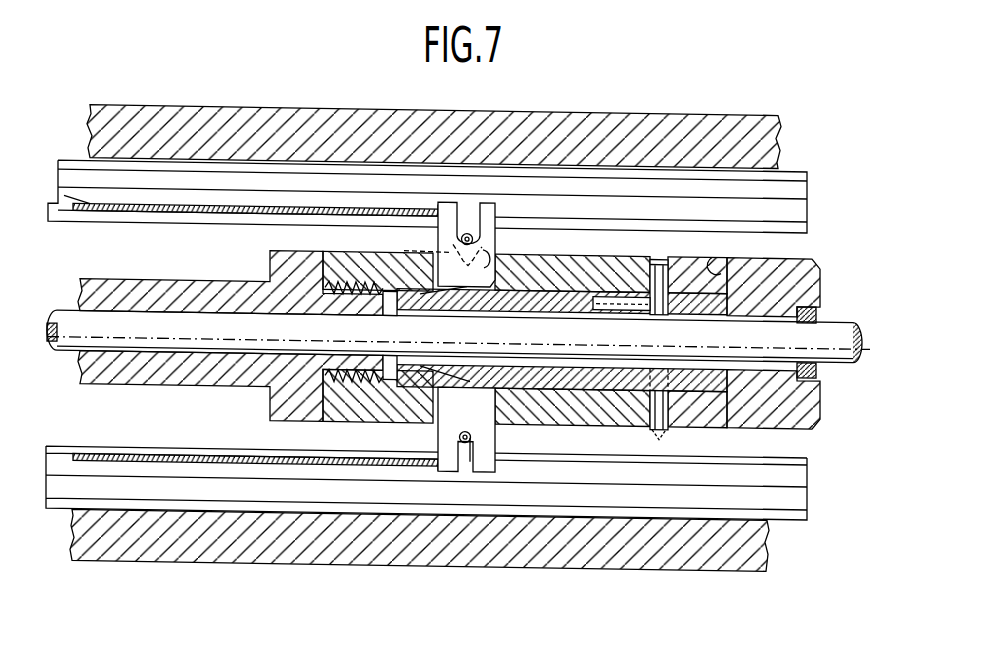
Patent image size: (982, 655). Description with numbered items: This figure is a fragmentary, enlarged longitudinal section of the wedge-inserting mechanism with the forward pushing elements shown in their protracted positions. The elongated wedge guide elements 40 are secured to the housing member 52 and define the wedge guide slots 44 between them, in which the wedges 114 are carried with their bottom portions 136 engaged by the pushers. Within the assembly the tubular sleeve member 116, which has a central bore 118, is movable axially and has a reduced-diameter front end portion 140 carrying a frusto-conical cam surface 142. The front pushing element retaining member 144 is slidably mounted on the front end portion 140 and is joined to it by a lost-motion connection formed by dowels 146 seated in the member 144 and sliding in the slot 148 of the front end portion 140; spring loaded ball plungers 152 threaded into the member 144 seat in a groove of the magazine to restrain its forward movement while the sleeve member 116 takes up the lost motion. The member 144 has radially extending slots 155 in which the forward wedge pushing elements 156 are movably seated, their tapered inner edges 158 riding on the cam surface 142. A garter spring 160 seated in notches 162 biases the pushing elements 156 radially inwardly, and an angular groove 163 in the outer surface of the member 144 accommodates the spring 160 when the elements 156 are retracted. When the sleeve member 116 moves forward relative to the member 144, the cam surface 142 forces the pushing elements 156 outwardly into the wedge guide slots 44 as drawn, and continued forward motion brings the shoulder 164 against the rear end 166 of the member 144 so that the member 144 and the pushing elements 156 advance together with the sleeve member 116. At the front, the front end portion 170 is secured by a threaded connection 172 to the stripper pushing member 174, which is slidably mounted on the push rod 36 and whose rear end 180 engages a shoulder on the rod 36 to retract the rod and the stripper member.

The push rod 36 is at (808, 342).
The wedge guide element 40 is at (532, 186).
The wedge guide slot 44 is at (802, 208).
The housing member 52 is at (452, 114).
The wedge 114 is at (268, 200).
The tubular sleeve member 116 is at (813, 278).
The central bore 118 is at (816, 307).
The bottom portion 136 is at (305, 211).
The reduced-diameter front end portion 140 is at (628, 366).
The frusto-conical cam surface 142 is at (488, 309).
The front pushing element retaining member 144 is at (580, 384).
The dowel 146 is at (650, 261).
The slot 148 is at (626, 304).
The spring loaded ball plunger 152 is at (663, 431).
The radially extending slot 155 is at (497, 283).
The forward wedge pushing element 156 is at (496, 270).
The tapered inner edge 158 is at (489, 421).
The garter spring 160 is at (472, 240).
The notch 162 is at (471, 452).
The angular groove 163 is at (453, 246).
The shoulder 164 is at (712, 258).
The rear end 166 is at (667, 428).
The front end portion 170 is at (350, 272).
The threaded connection 172 is at (350, 394).
The stripper pushing member 174 is at (192, 373).
The rear end 180 is at (357, 312).